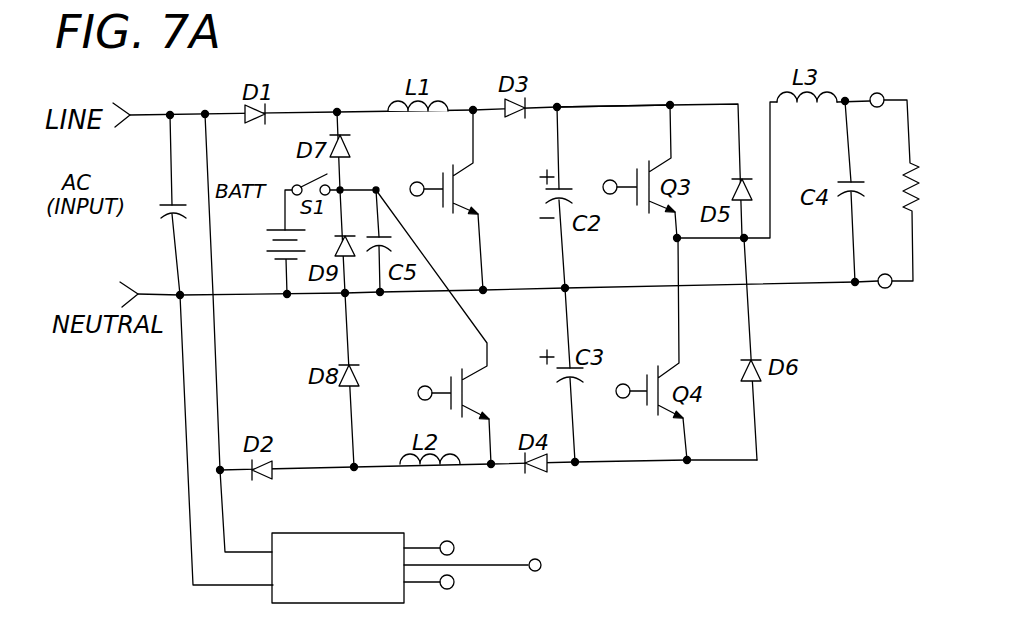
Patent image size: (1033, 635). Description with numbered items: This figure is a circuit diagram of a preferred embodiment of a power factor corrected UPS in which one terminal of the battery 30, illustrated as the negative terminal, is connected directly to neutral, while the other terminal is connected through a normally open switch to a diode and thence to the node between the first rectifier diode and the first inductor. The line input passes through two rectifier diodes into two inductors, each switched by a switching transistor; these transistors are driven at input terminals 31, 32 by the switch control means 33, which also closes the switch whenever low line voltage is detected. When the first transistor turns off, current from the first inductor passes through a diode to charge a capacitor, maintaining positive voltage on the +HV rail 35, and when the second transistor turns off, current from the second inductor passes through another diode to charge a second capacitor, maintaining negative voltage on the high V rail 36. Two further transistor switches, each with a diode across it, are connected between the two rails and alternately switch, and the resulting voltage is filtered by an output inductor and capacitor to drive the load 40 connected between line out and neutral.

The battery 30 is at (267, 247).
The input terminal 31 is at (411, 186).
The input terminal 32 is at (425, 386).
The switch control means 33 is at (300, 604).
The +HV rail 35 is at (608, 105).
The high V rail 36 is at (650, 461).
The load 40 is at (900, 183).